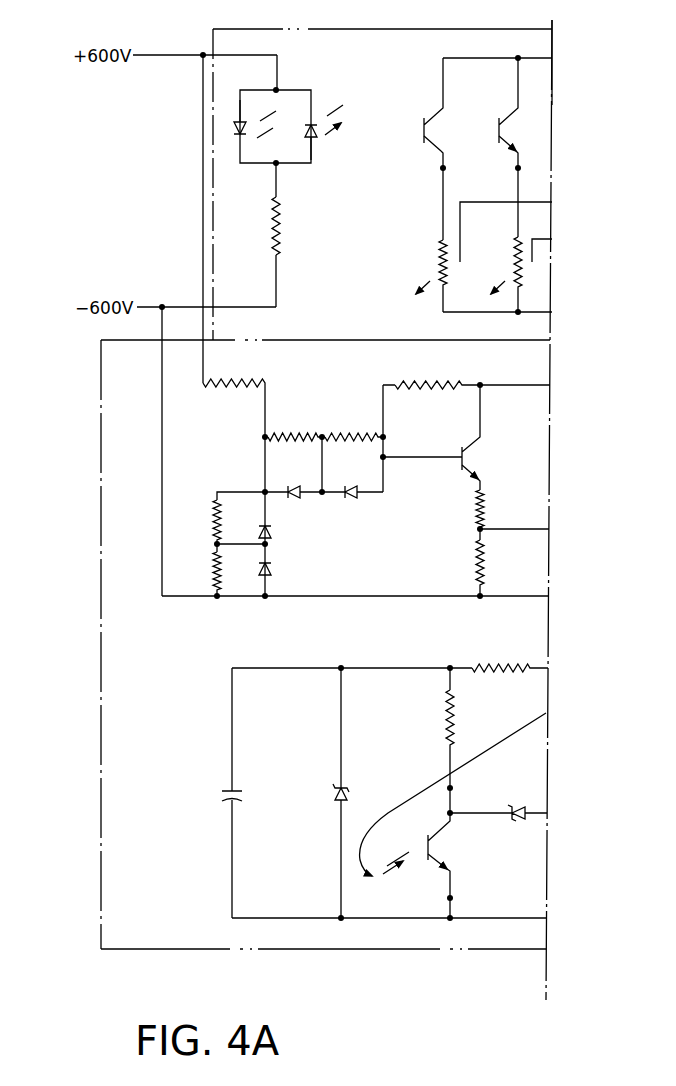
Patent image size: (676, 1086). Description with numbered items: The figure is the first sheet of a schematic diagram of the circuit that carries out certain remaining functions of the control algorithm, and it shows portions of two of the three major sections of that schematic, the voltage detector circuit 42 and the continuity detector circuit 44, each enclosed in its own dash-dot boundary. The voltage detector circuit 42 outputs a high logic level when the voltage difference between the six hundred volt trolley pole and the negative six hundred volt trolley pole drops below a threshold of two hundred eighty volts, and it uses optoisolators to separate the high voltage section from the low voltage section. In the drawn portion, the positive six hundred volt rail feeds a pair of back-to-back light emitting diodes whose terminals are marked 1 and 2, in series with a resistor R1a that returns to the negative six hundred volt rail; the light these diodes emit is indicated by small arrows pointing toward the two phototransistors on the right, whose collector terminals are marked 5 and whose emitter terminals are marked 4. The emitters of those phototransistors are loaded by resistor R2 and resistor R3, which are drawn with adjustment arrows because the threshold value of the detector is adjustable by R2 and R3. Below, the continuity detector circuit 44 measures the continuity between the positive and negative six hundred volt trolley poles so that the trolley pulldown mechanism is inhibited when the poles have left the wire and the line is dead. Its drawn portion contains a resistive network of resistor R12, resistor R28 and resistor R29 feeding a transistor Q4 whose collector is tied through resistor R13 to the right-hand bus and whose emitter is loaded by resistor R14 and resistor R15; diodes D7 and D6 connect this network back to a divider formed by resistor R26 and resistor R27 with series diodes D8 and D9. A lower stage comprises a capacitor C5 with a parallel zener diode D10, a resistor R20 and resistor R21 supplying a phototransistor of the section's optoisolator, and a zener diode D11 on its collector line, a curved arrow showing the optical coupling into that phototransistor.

The voltage detector circuit 42 is at (384, 20).
The continuity detector circuit 44 is at (100, 532).
The light emitting diode terminal 1 is at (284, 126).
The light emitting diode terminal 2 is at (278, 124).
The phototransistor emitter terminal 4 is at (488, 195).
The phototransistor collector terminal 5 is at (480, 104).
The resistor R1a is at (257, 235).
The resistor R2 is at (427, 276).
The resistor R3 is at (502, 274).
The resistor R12 is at (235, 479).
The resistor R13 is at (466, 374).
The resistor R14 is at (494, 515).
The resistor R15 is at (463, 569).
The resistor R20 is at (432, 742).
The resistor R21 is at (499, 658).
The resistor R26 is at (219, 519).
The resistor R27 is at (199, 571).
The resistor R28 is at (295, 426).
The resistor R29 is at (354, 426).
The diode D6 is at (352, 505).
The diode D7 is at (293, 505).
The diode D8 is at (282, 534).
The diode D9 is at (282, 570).
The zener diode D10 is at (358, 793).
The zener diode D11 is at (498, 802).
The transistor Q4 is at (431, 437).
The capacitor C5 is at (237, 793).